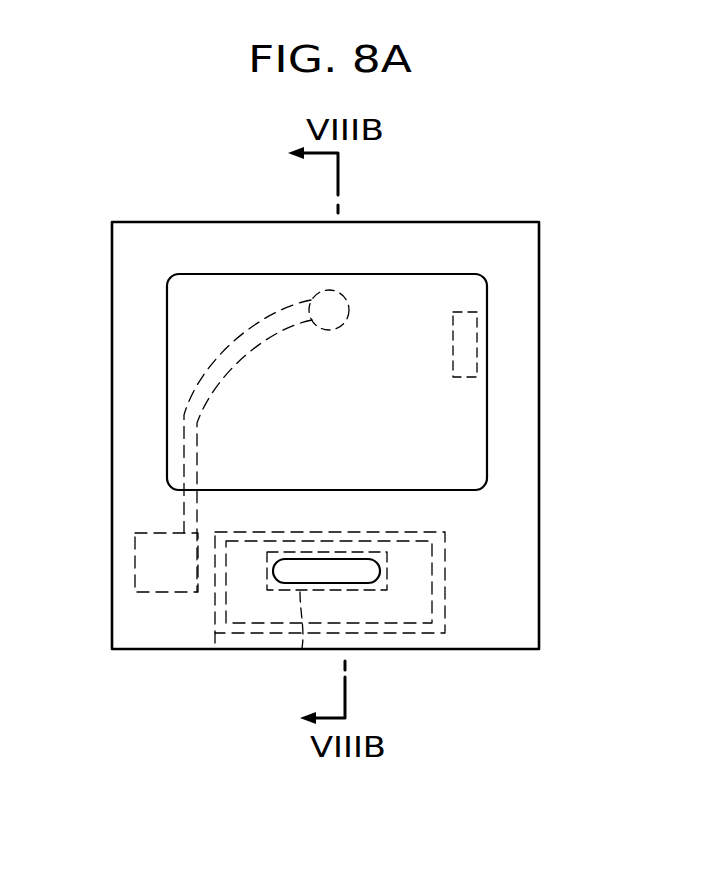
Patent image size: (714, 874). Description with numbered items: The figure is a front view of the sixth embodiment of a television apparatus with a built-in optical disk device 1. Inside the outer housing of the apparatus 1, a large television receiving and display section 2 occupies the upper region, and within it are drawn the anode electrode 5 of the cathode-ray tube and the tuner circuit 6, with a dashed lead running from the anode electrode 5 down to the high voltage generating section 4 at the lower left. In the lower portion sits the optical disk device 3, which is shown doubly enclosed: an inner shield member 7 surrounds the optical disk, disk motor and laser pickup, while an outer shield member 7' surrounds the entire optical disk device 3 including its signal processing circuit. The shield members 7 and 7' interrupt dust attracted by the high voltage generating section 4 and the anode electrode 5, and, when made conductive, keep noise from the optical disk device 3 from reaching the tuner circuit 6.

The television apparatus with a built-in optical disk device 1 is at (111, 244).
The television receiving and display section 2 is at (488, 443).
The optical disk device 3 is at (366, 571).
The high voltage generating section 4 is at (135, 558).
The anode electrode 5 is at (349, 312).
The tuner circuit 6 is at (478, 347).
The shield member 7 is at (300, 649).
The shield member 7' is at (208, 670).